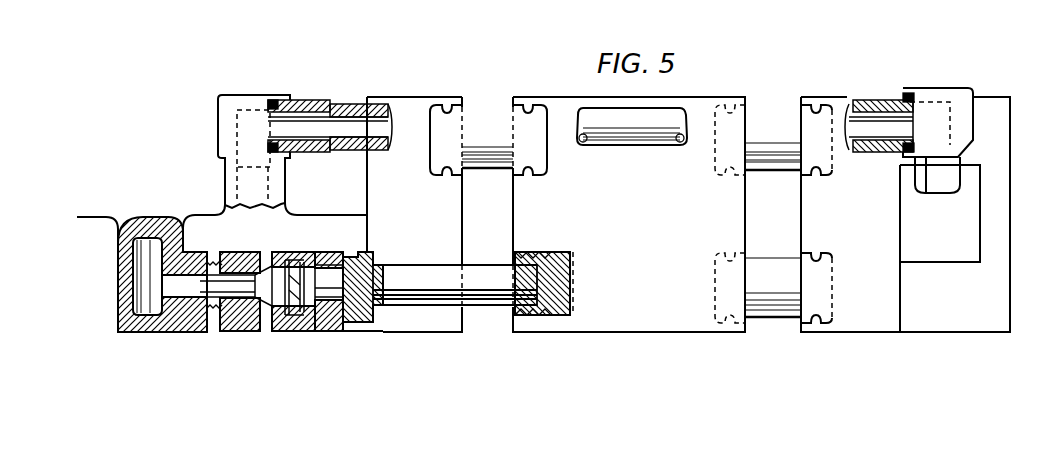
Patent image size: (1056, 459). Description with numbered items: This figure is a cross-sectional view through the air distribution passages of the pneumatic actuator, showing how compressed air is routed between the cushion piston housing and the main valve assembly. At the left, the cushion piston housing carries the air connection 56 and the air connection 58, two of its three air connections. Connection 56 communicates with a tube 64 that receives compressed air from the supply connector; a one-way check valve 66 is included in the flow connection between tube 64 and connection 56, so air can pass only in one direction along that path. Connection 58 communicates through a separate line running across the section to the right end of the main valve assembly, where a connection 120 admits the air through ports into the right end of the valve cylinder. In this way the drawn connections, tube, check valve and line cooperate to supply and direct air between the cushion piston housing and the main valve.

The air connection 56 is at (150, 245).
The air connection 58 is at (237, 183).
The tube 64 is at (488, 288).
The one-way check valve 66 is at (300, 305).
The connection 120 is at (938, 178).